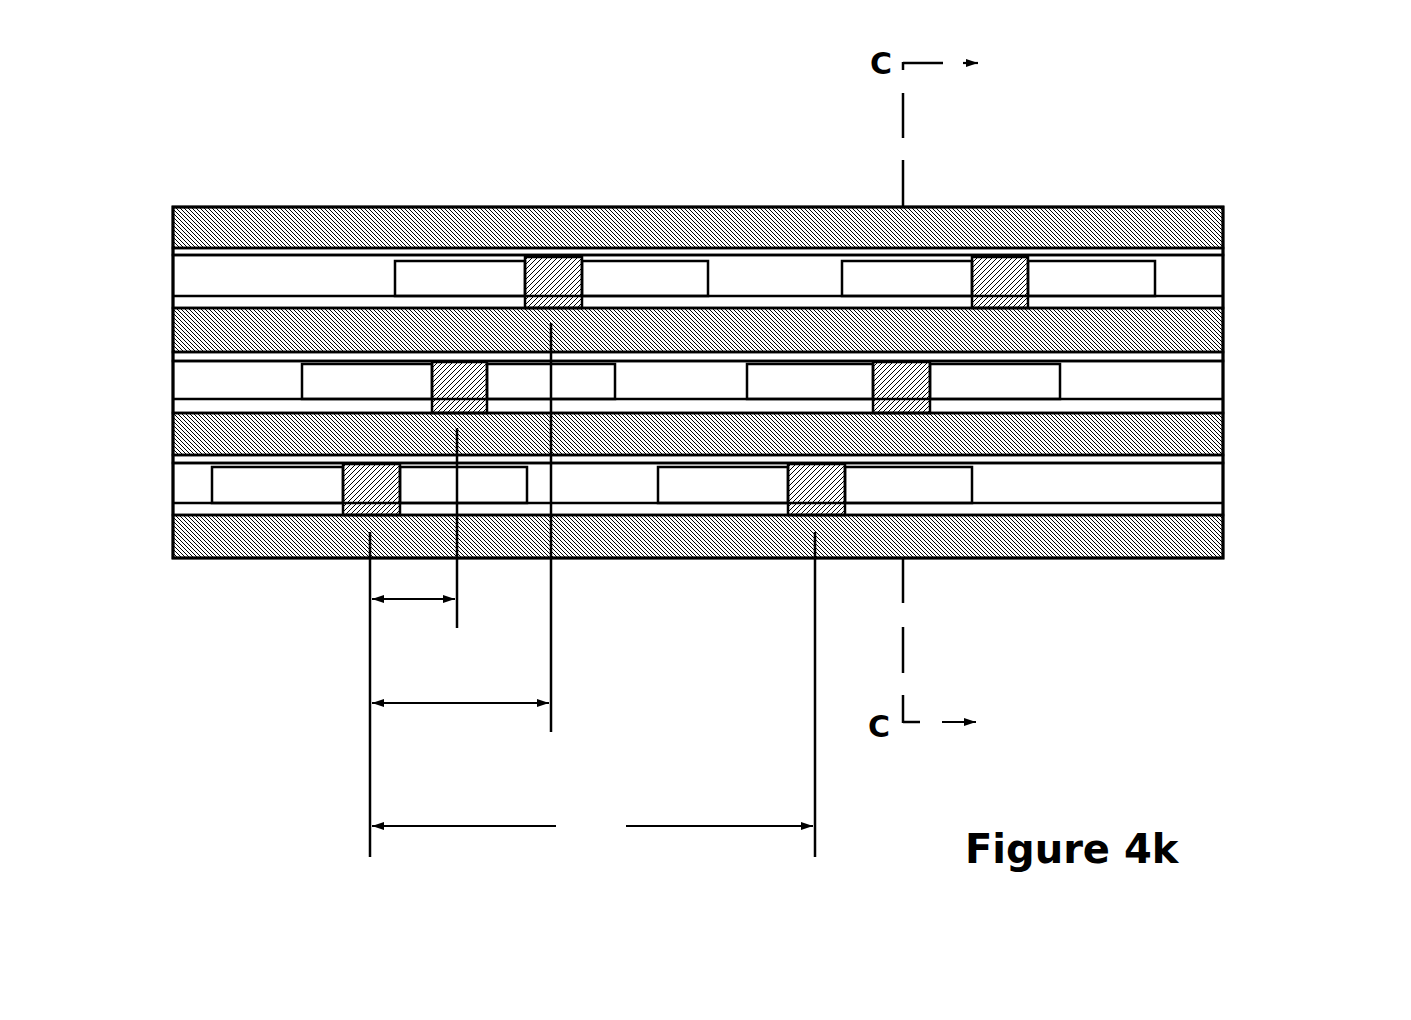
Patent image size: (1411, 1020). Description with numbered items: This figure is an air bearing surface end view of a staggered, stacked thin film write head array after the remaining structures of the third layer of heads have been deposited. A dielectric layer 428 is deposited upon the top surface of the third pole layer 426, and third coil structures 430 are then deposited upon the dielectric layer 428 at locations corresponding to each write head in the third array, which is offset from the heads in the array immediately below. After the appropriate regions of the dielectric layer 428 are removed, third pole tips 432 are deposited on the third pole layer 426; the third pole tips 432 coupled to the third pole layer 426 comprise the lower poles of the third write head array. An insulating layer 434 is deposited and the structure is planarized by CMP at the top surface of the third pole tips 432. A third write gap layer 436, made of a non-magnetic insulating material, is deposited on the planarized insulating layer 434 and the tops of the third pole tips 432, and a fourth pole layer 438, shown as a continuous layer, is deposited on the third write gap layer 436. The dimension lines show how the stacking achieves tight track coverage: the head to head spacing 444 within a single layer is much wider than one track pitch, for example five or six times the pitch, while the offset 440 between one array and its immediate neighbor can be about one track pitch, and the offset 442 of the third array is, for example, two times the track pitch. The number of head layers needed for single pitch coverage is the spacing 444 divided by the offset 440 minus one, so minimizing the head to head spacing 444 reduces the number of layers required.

The third pole layer 426 is at (706, 315).
The dielectric layer 428 is at (1225, 303).
The third coil structures 430 is at (647, 283).
The third pole tips 432 is at (553, 277).
The insulating layer 434 is at (1225, 283).
The third write gap layer 436 is at (1225, 249).
The fourth pole layer 438 is at (1225, 226).
The offset 440 is at (413, 642).
The offset 442 is at (461, 548).
The head to head spacing 444 is at (593, 694).